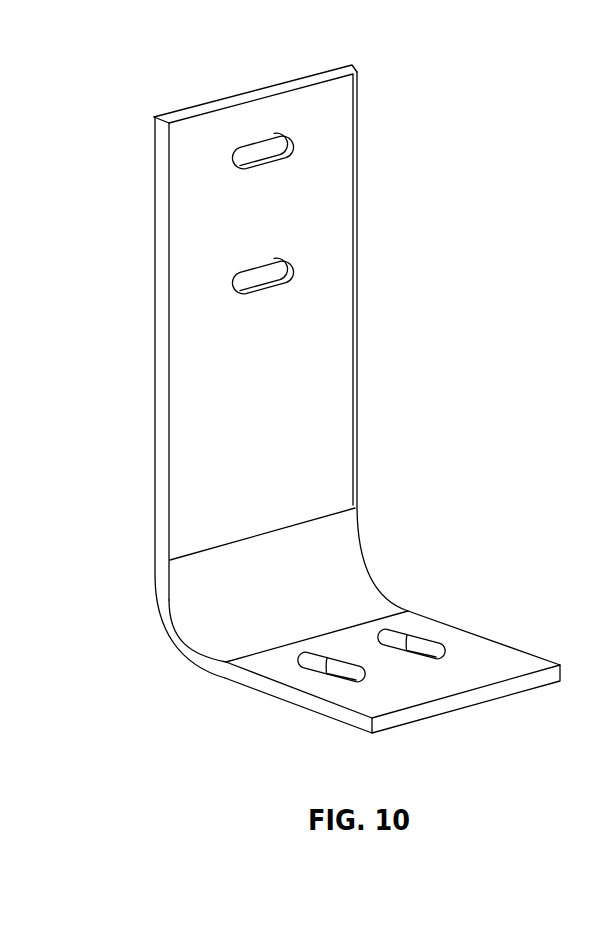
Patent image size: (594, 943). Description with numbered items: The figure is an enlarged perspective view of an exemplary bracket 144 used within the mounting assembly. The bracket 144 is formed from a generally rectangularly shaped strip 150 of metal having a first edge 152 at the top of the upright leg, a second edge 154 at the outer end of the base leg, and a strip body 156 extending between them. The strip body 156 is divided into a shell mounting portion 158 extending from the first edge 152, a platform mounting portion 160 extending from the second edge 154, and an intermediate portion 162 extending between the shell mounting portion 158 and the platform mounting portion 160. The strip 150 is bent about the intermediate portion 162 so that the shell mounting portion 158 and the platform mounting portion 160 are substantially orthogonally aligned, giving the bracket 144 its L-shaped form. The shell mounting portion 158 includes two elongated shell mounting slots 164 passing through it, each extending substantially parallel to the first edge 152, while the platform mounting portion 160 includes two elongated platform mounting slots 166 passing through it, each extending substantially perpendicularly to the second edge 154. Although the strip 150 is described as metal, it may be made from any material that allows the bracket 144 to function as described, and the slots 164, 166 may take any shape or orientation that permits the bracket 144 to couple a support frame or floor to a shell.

The bracket 144 is at (316, 383).
The strip 150 is at (140, 408).
The first edge 152 is at (252, 97).
The second edge 154 is at (487, 692).
The strip body 156 is at (370, 409).
The shell mounting portion 158 is at (291, 406).
The platform mounting portion 160 is at (431, 691).
The intermediate portion 162 is at (296, 593).
The shell mounting slot 164 is at (314, 141).
The platform mounting slot 166 is at (340, 643).